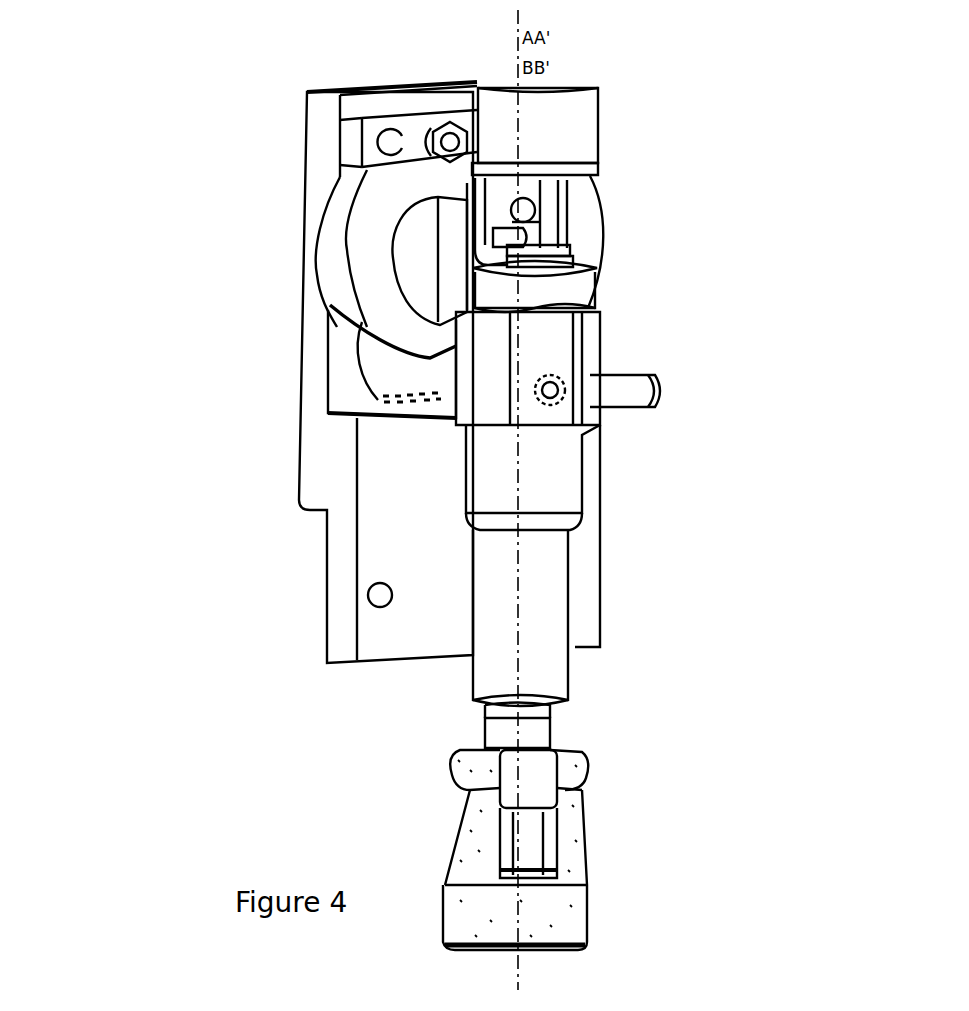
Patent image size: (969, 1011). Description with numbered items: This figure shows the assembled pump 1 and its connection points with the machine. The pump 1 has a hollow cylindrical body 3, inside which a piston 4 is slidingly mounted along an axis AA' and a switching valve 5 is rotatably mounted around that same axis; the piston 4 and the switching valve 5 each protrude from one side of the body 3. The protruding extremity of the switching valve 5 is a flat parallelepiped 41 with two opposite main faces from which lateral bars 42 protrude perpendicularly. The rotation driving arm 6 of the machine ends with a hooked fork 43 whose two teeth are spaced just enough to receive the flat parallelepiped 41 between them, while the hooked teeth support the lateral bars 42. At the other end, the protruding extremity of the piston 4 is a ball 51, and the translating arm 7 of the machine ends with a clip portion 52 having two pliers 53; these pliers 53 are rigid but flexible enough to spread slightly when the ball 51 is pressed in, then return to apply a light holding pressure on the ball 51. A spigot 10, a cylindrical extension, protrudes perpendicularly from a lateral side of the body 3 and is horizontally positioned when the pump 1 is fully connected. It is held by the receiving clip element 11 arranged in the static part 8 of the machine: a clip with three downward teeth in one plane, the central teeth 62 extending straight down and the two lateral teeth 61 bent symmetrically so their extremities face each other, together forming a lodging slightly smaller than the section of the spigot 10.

The pump 1 is at (550, 615).
The hollow cylindrical body 3 is at (540, 490).
The piston 4 is at (515, 740).
The switching valve 5 is at (555, 267).
The rotation driving arm 6 is at (552, 130).
The translating arm 7 is at (505, 920).
The static part 8 is at (313, 157).
The spigot 10 is at (458, 322).
The receiving clip element 11 is at (478, 296).
The flat parallelepiped 41 is at (552, 192).
The lateral bars 42 is at (540, 223).
The hooked fork 43 is at (478, 213).
The ball 51 is at (518, 786).
The clip portion 52 is at (530, 872).
The pliers 53 is at (470, 815).
The lateral teeth 61 is at (353, 333).
The central teeth 62 is at (475, 267).